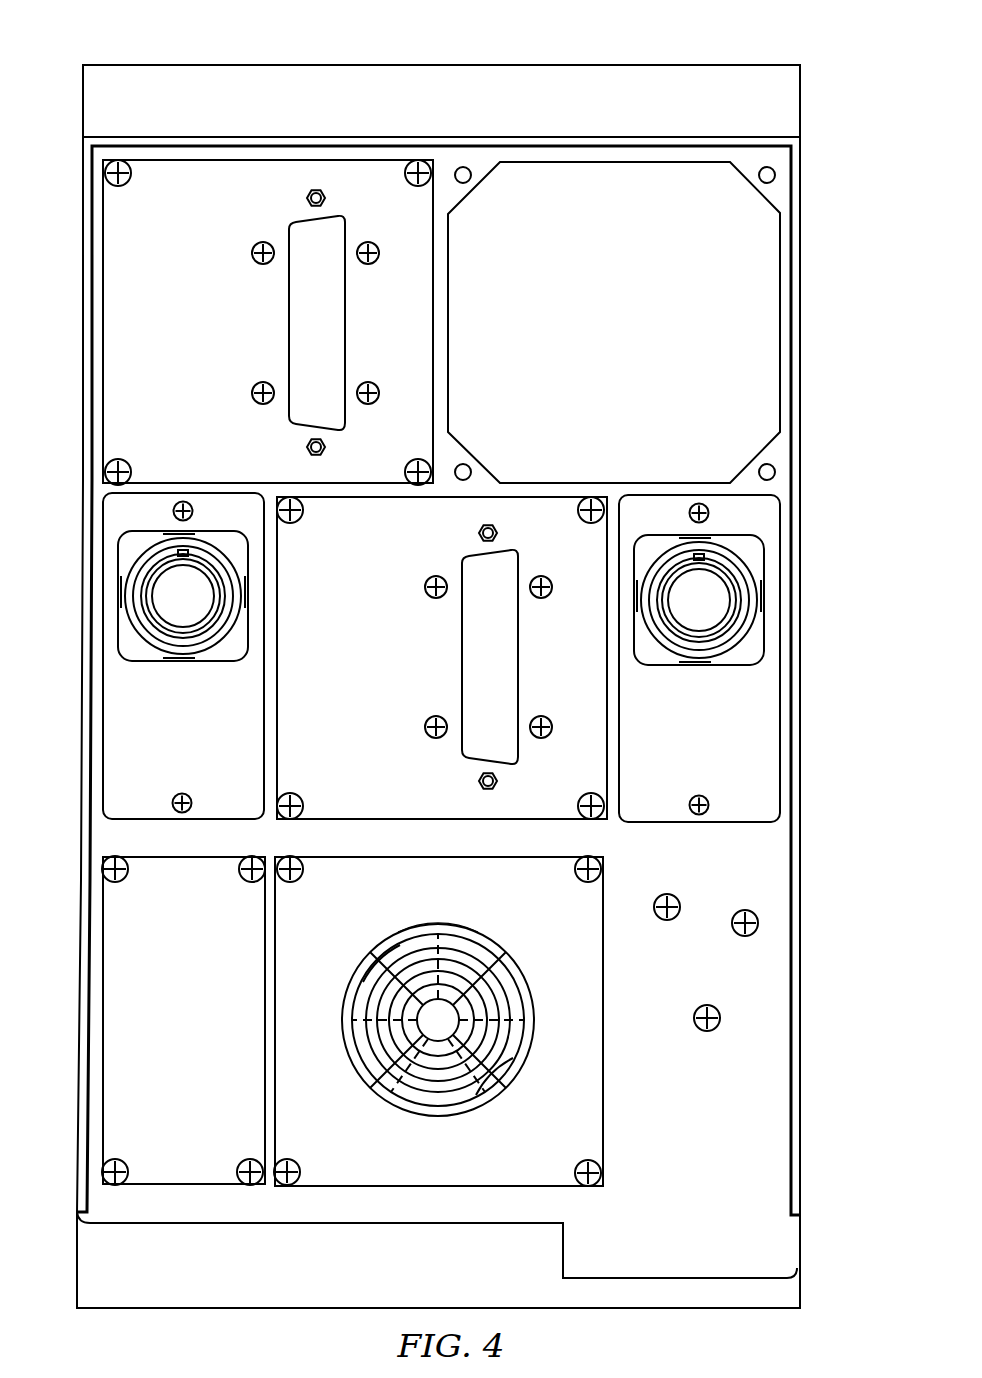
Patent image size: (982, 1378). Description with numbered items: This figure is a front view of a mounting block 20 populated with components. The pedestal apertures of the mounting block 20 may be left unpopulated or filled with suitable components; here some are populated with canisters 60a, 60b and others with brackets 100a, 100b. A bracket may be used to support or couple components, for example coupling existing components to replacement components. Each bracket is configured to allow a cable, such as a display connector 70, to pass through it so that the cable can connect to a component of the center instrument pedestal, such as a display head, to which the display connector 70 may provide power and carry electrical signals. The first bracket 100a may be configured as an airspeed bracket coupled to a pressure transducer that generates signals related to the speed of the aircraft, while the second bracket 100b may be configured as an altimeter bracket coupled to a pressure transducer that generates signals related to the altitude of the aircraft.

The mounting block 20 is at (590, 63).
The canister 60a is at (205, 338).
The canister 60b is at (379, 672).
The display connector 70 is at (182, 597).
The first bracket 100a is at (157, 740).
The second bracket 100b is at (673, 742).